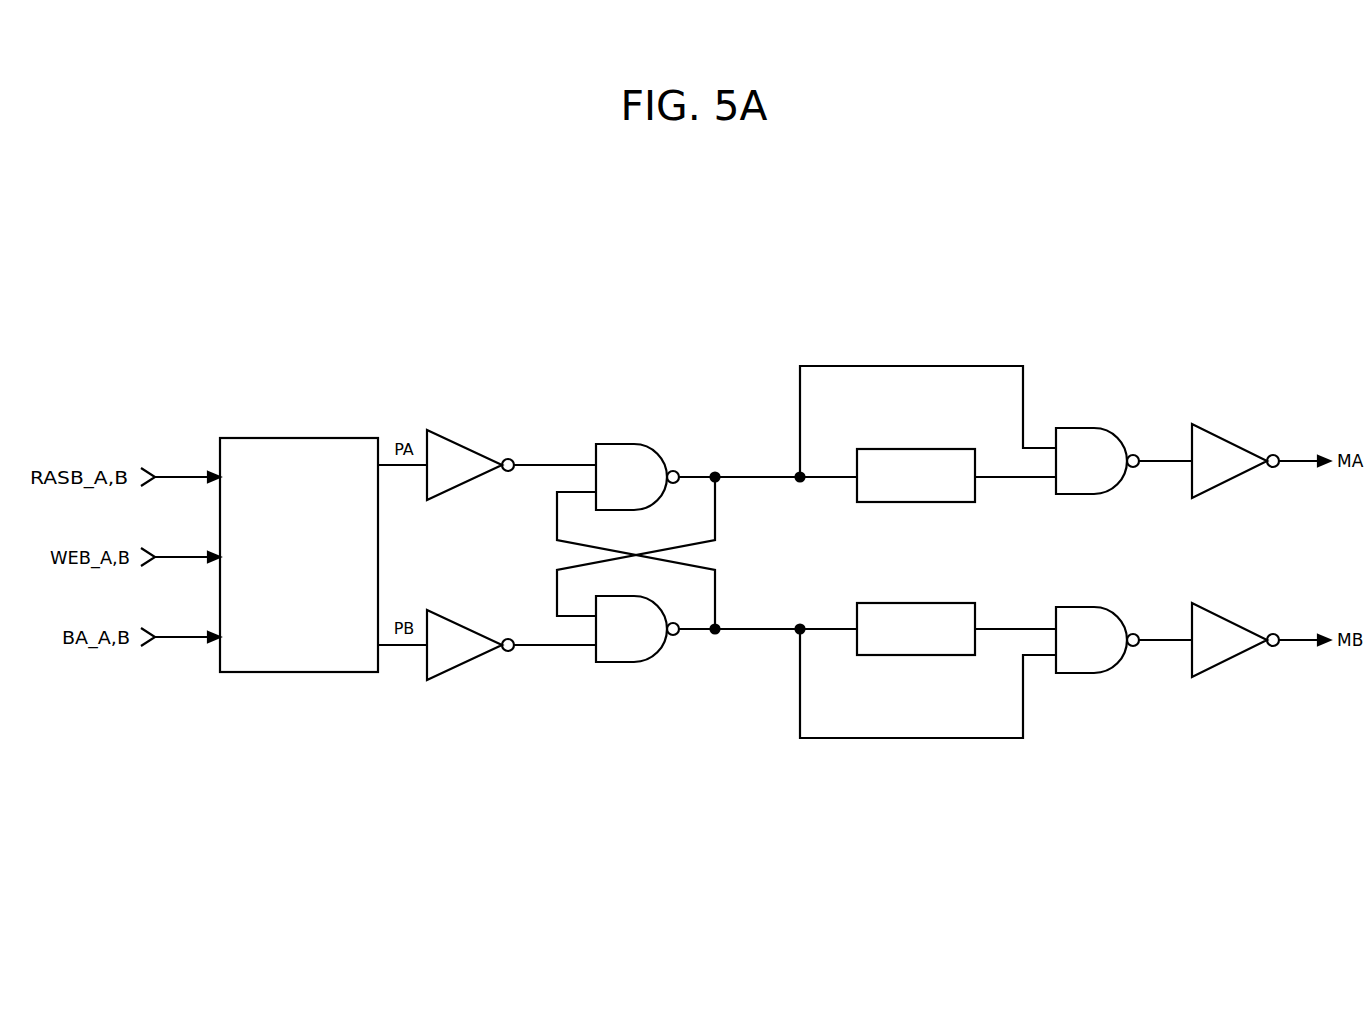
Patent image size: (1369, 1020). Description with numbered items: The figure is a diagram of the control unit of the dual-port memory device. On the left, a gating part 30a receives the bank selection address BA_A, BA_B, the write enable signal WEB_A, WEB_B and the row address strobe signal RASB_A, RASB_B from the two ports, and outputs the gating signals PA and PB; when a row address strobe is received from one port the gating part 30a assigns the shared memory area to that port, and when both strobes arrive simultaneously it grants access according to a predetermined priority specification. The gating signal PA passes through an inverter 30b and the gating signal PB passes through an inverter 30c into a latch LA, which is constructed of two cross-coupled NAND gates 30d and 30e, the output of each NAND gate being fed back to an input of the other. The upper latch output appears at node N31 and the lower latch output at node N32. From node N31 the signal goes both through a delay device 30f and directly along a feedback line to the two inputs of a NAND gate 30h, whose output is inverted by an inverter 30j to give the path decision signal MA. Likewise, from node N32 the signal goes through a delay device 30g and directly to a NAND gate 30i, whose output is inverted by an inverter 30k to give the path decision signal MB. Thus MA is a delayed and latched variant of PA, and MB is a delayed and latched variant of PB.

The gating part 30a is at (310, 438).
The inverter 30b is at (468, 446).
The inverter 30c is at (470, 629).
The NAND gate 30d is at (637, 445).
The NAND gate 30e is at (607, 663).
The delay device 30f is at (916, 449).
The delay device 30g is at (920, 655).
The NAND gate 30h is at (1090, 428).
The NAND gate 30i is at (1088, 674).
The inverter 30j is at (1231, 442).
The inverter 30k is at (1232, 659).
The latch LA is at (750, 568).
The node N31 is at (800, 484).
The node N32 is at (804, 626).